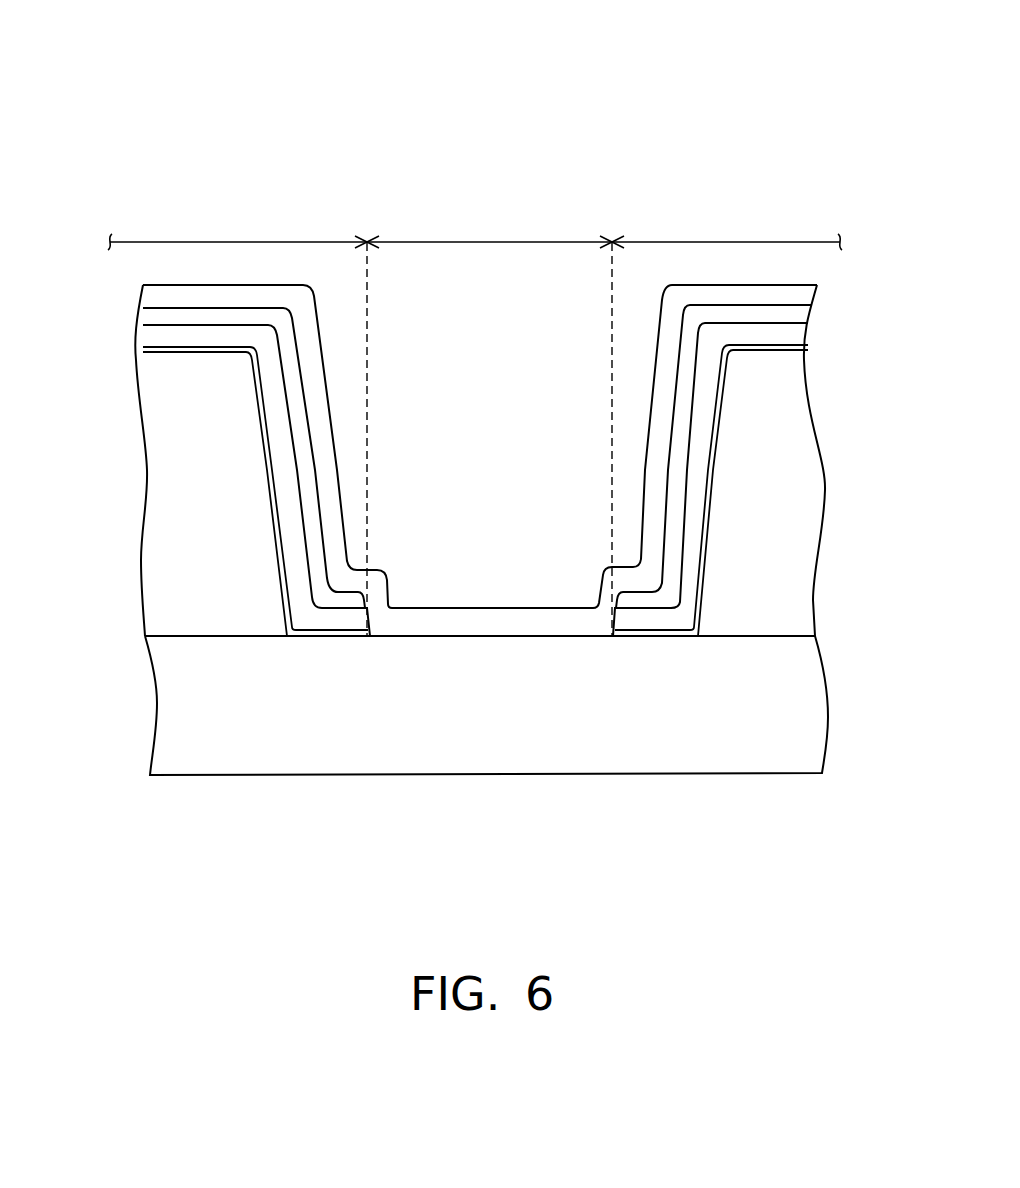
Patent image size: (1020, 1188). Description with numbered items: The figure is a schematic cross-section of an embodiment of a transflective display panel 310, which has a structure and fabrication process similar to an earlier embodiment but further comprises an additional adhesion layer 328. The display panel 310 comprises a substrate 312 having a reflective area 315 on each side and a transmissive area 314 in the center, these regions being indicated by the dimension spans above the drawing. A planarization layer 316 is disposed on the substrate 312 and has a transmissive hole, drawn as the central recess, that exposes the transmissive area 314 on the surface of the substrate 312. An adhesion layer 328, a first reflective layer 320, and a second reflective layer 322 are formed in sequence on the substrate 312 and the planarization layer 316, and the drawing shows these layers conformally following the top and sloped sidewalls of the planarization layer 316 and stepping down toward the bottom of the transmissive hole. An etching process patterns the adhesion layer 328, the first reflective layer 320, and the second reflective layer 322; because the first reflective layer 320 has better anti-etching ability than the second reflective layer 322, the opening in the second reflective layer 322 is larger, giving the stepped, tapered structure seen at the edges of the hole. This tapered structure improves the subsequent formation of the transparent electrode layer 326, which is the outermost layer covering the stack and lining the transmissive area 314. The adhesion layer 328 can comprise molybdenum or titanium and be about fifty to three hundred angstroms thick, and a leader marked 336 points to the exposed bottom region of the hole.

The transflective display panel 310 is at (690, 157).
The substrate 312 is at (757, 717).
The transmissive area 314 is at (489, 424).
The reflective area 315 is at (475, 230).
The planarization layer 316 is at (788, 483).
The first reflective layer 320 is at (140, 338).
The second reflective layer 322 is at (140, 318).
The transparent electrode layer 326 is at (803, 297).
The adhesion layer 328 is at (137, 352).
The trench bottom surface 336 is at (557, 623).